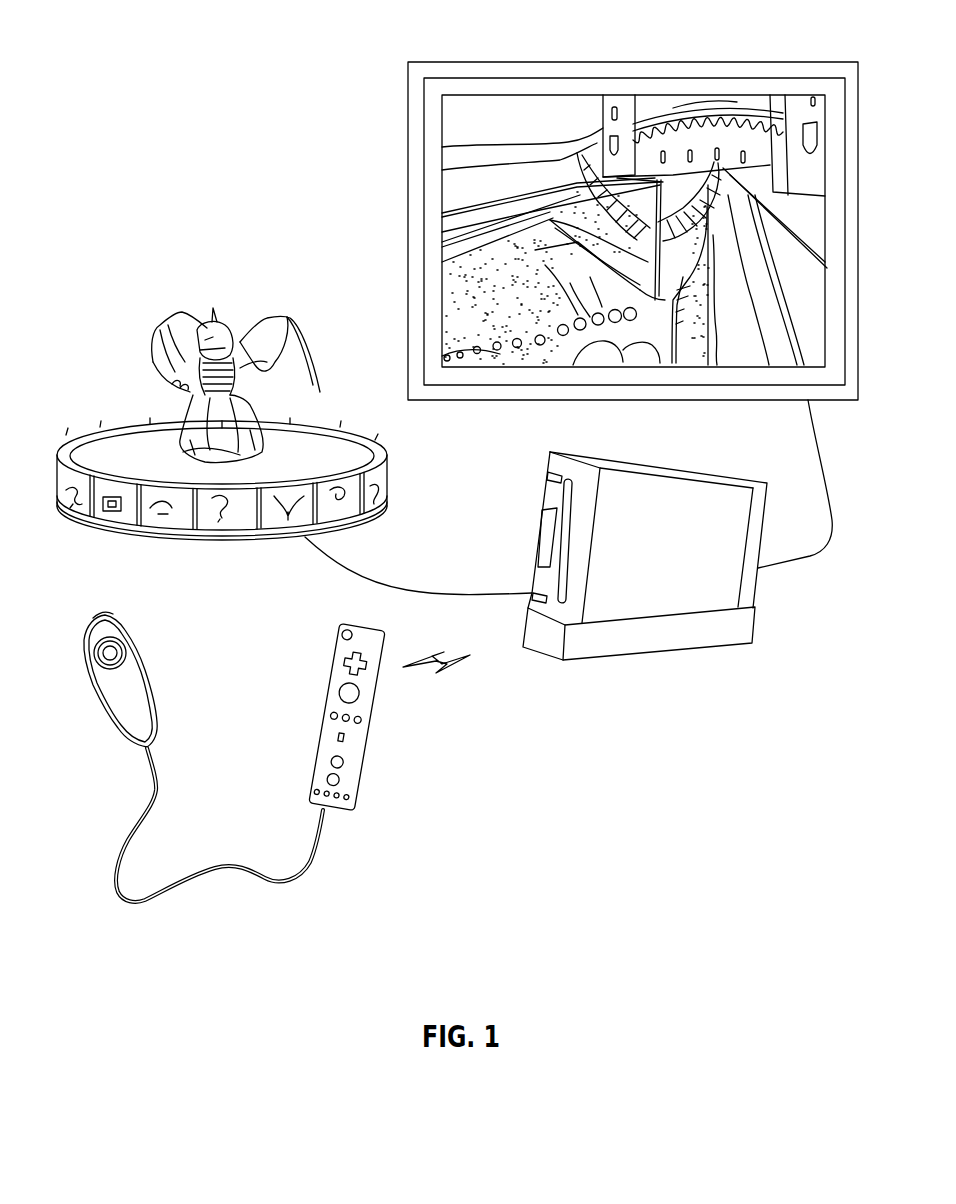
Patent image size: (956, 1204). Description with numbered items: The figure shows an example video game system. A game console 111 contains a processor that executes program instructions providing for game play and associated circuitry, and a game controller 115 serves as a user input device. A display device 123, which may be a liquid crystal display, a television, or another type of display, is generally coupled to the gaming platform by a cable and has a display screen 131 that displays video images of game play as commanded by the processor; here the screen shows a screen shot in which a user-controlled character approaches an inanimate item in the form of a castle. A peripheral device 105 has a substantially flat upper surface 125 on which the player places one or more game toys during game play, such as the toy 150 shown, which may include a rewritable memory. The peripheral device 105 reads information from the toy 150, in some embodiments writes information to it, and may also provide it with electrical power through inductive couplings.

The peripheral device 105 is at (199, 547).
The game console 111 is at (653, 657).
The game controller 115 is at (362, 707).
The display device 123 is at (440, 187).
The flat upper surface 125 is at (113, 450).
The display screen 131 is at (571, 93).
The toy 150 is at (282, 313).